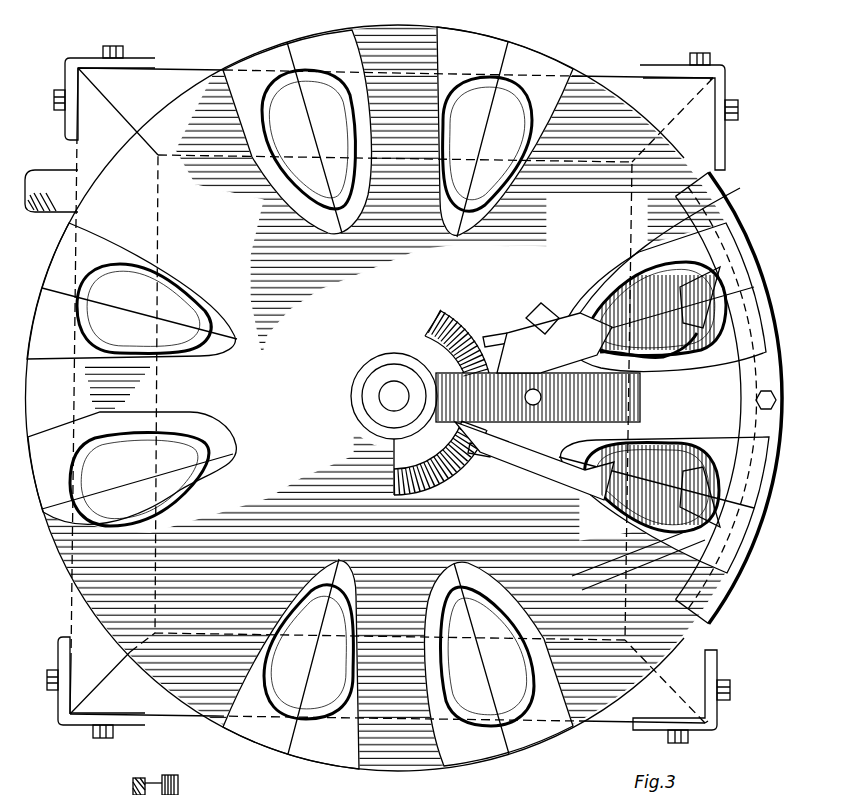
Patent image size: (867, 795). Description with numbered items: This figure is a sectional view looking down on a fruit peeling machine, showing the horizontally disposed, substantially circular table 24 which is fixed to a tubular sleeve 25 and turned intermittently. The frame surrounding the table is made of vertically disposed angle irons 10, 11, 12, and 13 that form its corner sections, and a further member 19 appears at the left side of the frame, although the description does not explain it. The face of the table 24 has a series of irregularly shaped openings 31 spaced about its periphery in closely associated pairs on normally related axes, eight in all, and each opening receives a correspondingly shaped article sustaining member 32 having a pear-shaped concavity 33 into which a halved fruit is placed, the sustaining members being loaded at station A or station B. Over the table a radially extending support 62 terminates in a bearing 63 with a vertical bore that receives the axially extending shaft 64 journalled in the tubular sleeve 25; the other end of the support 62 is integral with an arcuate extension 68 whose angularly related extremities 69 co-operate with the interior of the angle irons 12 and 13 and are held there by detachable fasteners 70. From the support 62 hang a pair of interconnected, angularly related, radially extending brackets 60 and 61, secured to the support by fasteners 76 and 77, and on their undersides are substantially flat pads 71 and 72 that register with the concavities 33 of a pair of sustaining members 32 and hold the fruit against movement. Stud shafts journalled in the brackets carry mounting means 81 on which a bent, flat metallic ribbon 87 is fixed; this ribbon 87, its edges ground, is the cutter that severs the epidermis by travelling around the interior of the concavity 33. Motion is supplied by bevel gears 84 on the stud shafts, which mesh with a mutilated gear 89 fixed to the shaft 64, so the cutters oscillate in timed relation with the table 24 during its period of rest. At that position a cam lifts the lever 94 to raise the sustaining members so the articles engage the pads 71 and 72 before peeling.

The angle iron 10 is at (80, 58).
The angle iron 11 is at (58, 717).
The angle iron 12 is at (722, 65).
The angle iron 13 is at (718, 722).
The shaft 19 is at (75, 620).
The table 24 is at (202, 105).
The tubular sleeve 25 is at (178, 786).
The openings 31 is at (366, 60).
The article sustaining member 32 is at (549, 68).
The concavity 33 is at (318, 92).
The bracket 60 is at (518, 340).
The bracket 61 is at (540, 478).
The support 62 is at (423, 352).
The bearing 63 is at (374, 363).
The shaft 64 is at (390, 393).
The arcuate extension 68 is at (760, 300).
The angularly related extremities 69 is at (718, 80).
The fasteners 70 is at (700, 53).
The pad 71 is at (653, 275).
The pad 72 is at (620, 548).
The fastener 76 is at (543, 396).
The fastener 77 is at (774, 398).
The mounting means 81 is at (538, 305).
The bevel gear 84 is at (482, 340).
The metallic ribbon 87 is at (700, 338).
The mutilated gear 89 is at (448, 318).
The lever 94 is at (125, 784).